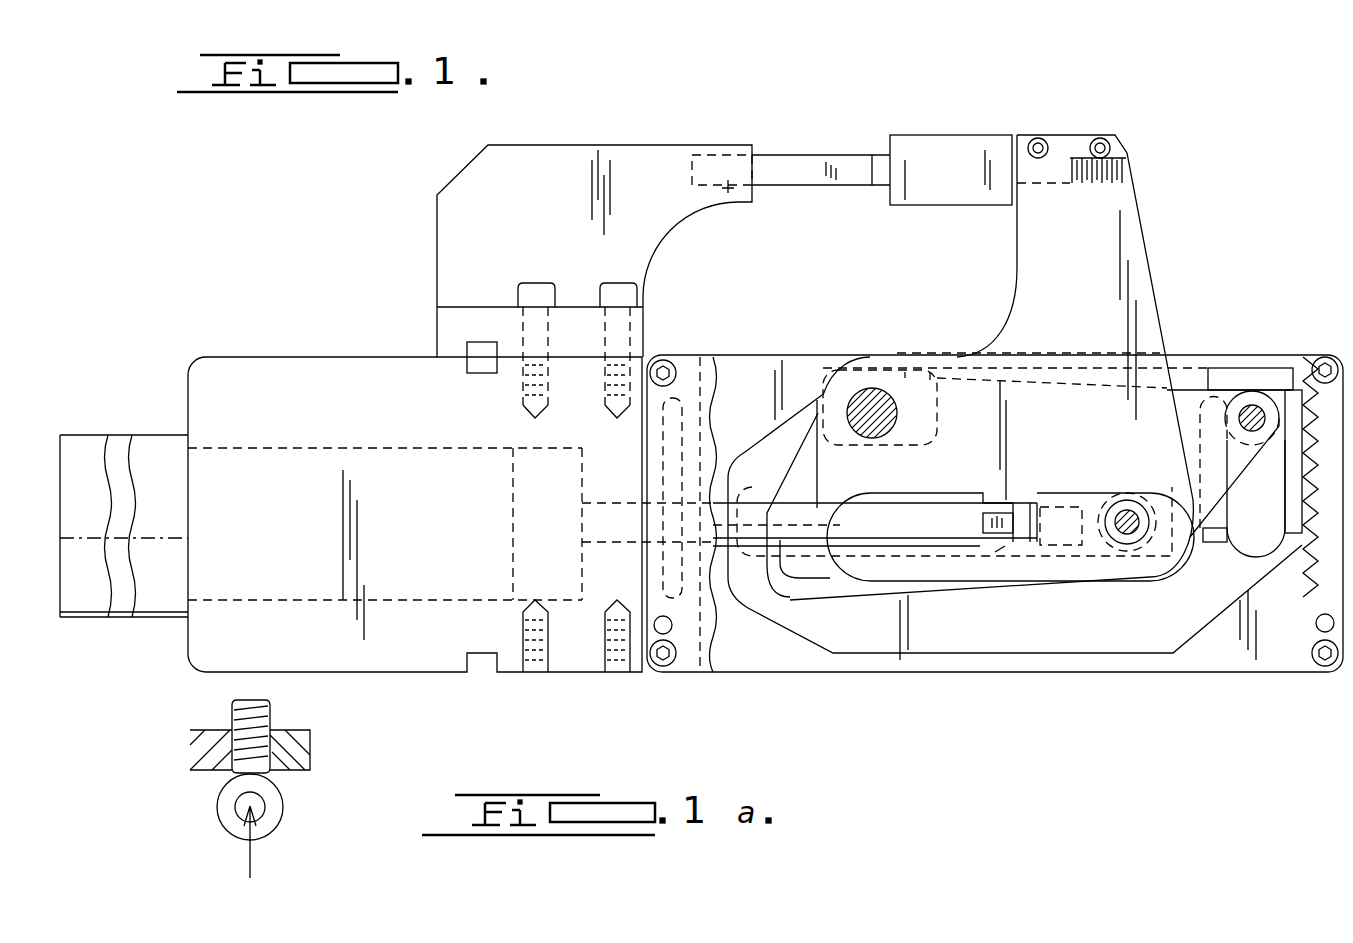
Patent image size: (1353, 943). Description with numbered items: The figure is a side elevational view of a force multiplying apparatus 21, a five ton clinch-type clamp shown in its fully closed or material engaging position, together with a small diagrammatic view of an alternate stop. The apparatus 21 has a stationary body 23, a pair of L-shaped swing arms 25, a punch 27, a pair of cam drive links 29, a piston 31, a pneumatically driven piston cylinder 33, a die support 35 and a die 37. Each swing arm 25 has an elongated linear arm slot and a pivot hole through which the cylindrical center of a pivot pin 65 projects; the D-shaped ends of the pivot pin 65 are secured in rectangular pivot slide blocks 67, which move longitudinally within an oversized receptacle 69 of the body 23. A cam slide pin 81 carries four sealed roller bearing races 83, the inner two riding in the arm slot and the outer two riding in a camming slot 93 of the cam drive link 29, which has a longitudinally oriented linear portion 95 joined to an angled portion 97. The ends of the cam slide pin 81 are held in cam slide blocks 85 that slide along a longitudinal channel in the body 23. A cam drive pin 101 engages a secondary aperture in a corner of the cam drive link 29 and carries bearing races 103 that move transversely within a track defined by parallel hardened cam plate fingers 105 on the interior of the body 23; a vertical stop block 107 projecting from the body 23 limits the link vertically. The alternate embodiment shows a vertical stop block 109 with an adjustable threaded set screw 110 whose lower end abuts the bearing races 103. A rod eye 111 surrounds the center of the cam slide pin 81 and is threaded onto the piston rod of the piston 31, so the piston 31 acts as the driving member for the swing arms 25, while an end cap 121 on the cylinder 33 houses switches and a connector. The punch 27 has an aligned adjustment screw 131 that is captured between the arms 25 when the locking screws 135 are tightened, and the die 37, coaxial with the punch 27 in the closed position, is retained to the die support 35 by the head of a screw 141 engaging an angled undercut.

In FIG. 1, the force multiplying apparatus 21 is at (225, 258).
In FIG. 1, the body 23 is at (1303, 655).
In FIG. 1, the swing arm 25 is at (1100, 290).
In FIG. 1, the punch 27 is at (926, 152).
In FIG. 1, the cam drive link 29 is at (1236, 465).
In FIG. 1, the piston 31 is at (513, 515).
In FIG. 1, the piston cylinder 33 is at (262, 404).
In FIG. 1, the die support 35 is at (518, 199).
In FIG. 1, the die 37 is at (778, 160).
In FIG. 1, the pivot pin 65 is at (864, 408).
In FIG. 1, the pivot slide block 67 is at (900, 370).
In FIG. 1, the receptacle 69 is at (946, 372).
In FIG. 1, the cam slide pin 81 is at (1130, 512).
In FIG. 1, the bearing race 83 is at (1108, 508).
In FIG. 1, the cam slide block 85 is at (1092, 548).
In FIG. 1, the camming slot 93 is at (945, 495).
In FIG. 1, the linear portion 95 is at (1000, 550).
In FIG. 1, the angled portion 97 is at (805, 575).
In FIG. 1, the cam drive pin 101 is at (1272, 408).
In FIG. 1, the bearing race 103 is at (1244, 410).
In FIG. 1, the cam plate finger 105 is at (1305, 545).
In FIG. 1, the vertical stop block 107 is at (1224, 368).
In FIG. 1a, the vertical stop block 109 is at (312, 762).
In FIG. 1a, the threaded set screw 110 is at (232, 712).
In FIG. 1, the rod eye 111 is at (1050, 548).
In FIG. 1, the end cap 121 is at (90, 450).
In FIG. 1, the adjustment screw 131 is at (1043, 186).
In FIG. 1, the locking screw 135 is at (1098, 137).
In FIG. 1, the screw 141 is at (735, 195).